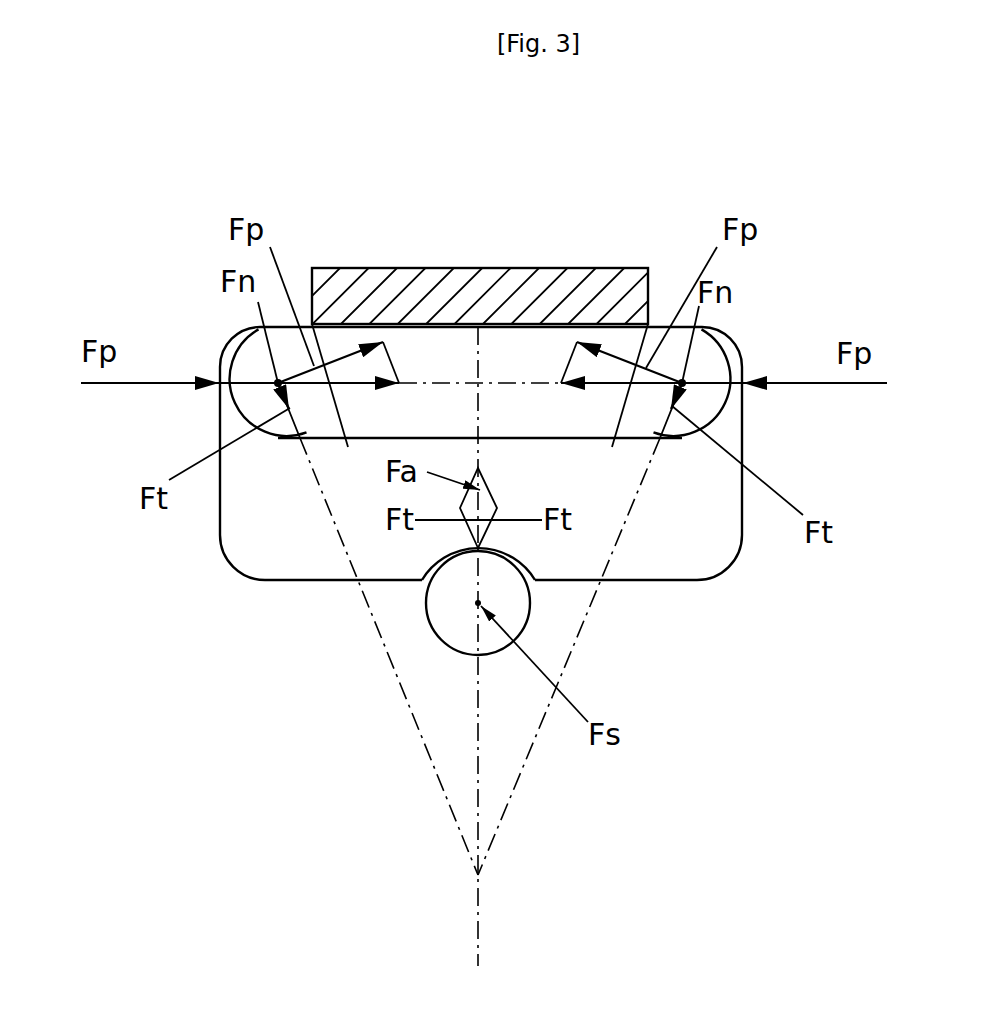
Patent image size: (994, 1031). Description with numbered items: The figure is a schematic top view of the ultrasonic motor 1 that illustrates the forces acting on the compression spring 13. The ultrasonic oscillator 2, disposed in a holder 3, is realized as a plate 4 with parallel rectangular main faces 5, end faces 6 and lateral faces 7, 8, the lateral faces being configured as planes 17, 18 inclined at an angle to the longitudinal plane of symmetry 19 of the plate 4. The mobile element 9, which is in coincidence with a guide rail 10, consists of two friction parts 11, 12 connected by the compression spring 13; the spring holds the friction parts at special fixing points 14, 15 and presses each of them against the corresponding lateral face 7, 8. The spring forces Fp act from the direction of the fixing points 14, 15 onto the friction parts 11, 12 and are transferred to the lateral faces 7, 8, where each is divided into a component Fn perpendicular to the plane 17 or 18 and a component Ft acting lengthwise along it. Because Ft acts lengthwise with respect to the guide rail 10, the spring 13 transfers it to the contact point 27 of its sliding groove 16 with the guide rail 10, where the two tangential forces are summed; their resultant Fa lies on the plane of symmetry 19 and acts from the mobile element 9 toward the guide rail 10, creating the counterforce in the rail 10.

The ultrasonic motor 1 is at (583, 232).
The ultrasonic oscillator 2 is at (505, 360).
The holder 3 is at (402, 293).
The plate 4 is at (455, 352).
The main faces 5 is at (362, 318).
The end faces 6 is at (530, 345).
The lateral face 7 is at (253, 348).
The lateral face 8 is at (702, 350).
The mobile element 9 is at (249, 609).
The guide rail 10 is at (499, 652).
The friction part 11 is at (260, 446).
The friction part 12 is at (678, 445).
The compression spring 13 is at (315, 582).
The fixing point 14 is at (219, 404).
The fixing point 15 is at (745, 406).
The sliding groove 16 is at (452, 562).
The plane 17 is at (437, 772).
The plane 18 is at (509, 790).
The longitudinal plane of symmetry 19 is at (481, 803).
The contact point 27 is at (486, 560).